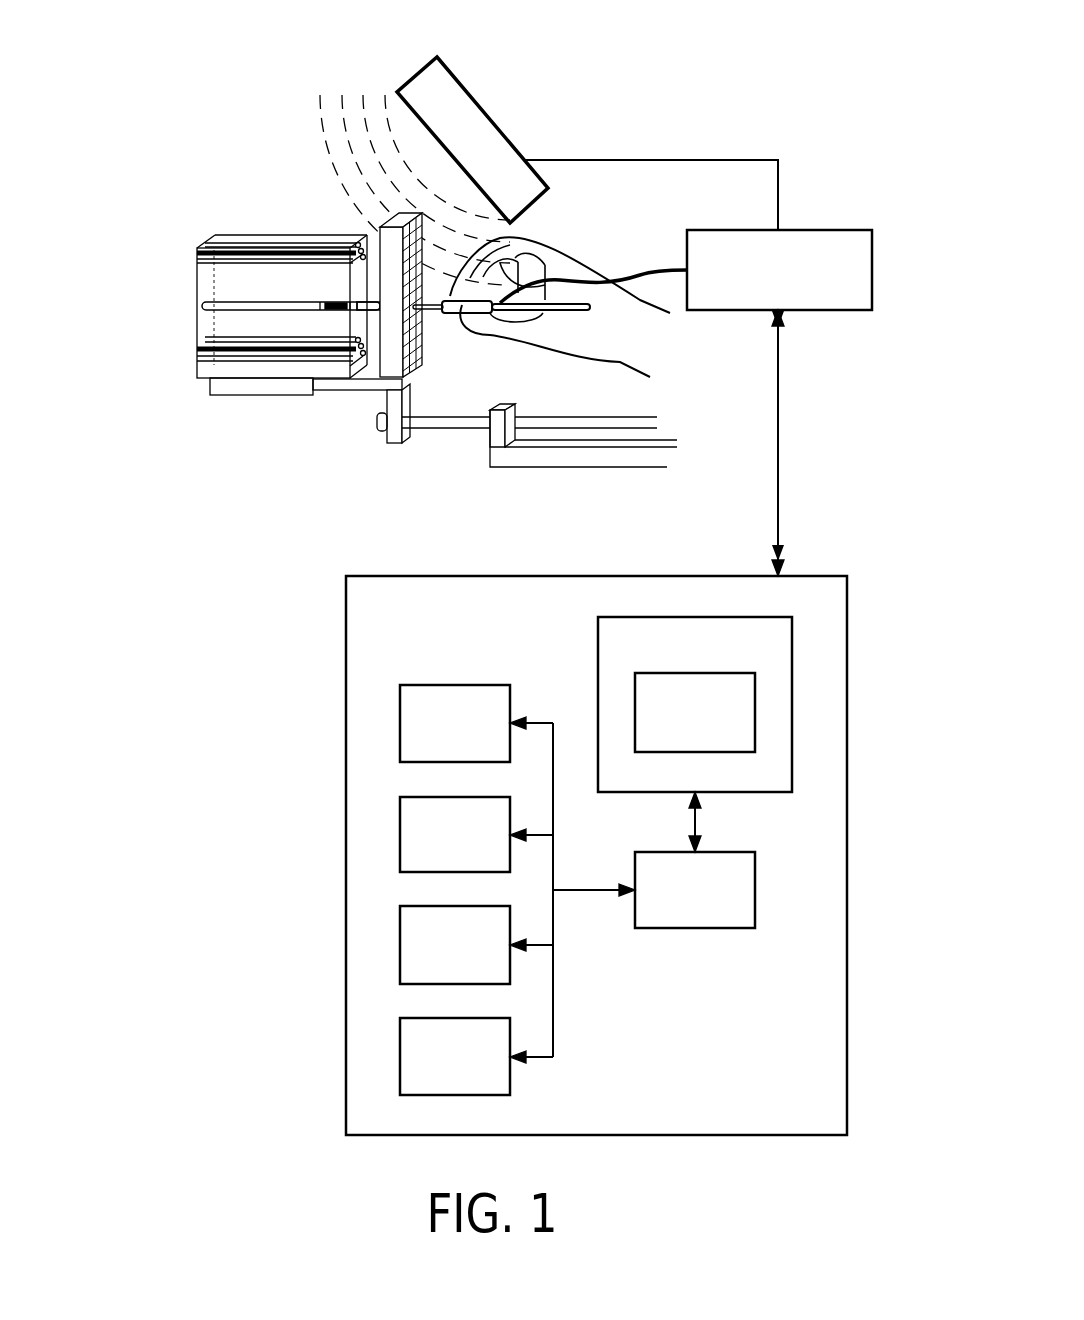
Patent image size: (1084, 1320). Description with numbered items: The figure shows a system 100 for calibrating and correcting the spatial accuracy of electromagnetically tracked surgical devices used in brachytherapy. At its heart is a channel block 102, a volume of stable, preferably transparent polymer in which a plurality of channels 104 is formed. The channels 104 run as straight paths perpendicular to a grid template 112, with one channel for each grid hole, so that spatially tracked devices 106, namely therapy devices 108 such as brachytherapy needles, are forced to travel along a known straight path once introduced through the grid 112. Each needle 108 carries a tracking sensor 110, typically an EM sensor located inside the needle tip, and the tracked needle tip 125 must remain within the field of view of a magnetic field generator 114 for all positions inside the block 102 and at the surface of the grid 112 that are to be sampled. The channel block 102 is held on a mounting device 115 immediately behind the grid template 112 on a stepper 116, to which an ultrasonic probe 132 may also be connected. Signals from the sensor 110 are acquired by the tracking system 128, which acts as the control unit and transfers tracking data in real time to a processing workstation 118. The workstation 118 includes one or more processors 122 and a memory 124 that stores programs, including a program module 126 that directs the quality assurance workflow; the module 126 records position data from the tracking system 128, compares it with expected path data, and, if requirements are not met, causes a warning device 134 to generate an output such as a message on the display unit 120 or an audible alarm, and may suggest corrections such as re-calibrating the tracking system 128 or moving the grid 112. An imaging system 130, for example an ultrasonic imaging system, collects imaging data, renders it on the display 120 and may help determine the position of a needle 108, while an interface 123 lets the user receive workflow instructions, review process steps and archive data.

The system 100 is at (187, 27).
The channel block 102 is at (228, 237).
The channels 104 is at (226, 304).
The spatially tracked devices 106 is at (458, 318).
The therapy device 108 is at (363, 305).
The tracking sensor 110 is at (337, 305).
The grid template 112 is at (388, 370).
The magnetic field generator 114 is at (475, 102).
The mounting device 115 is at (323, 385).
The stepper 116 is at (570, 458).
The processing workstation 118 is at (530, 613).
The display unit 120 is at (435, 861).
The processor 122 is at (675, 916).
The interface 123 is at (435, 973).
The memory 124 is at (745, 653).
The tracked needle tip 125 is at (320, 305).
The program module 126 is at (675, 739).
The tracking system 128 is at (757, 297).
The imaging system 130 is at (435, 749).
The ultrasonic probe 132 is at (223, 388).
The warning device 134 is at (435, 1083).